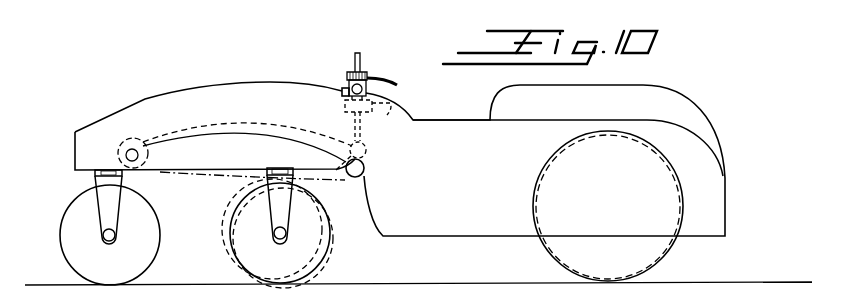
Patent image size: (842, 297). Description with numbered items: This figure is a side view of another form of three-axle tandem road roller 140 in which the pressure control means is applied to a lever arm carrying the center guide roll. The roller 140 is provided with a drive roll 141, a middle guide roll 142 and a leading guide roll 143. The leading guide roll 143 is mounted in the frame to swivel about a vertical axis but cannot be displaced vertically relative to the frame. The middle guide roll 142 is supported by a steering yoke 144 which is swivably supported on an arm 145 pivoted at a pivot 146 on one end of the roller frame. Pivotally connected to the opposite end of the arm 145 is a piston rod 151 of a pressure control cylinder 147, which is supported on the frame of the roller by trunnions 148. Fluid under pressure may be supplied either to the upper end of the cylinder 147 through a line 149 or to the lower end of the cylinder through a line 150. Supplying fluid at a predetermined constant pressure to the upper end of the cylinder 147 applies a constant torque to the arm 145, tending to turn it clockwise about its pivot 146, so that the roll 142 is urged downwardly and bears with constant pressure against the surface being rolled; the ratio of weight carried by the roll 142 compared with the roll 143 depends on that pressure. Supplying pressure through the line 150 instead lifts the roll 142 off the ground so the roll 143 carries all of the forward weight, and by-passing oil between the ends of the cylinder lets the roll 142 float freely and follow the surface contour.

The roller 140 is at (418, 111).
The drive roll 141 is at (652, 260).
The middle guide roll 142 is at (320, 256).
The leading guide roll 143 is at (147, 255).
The steering yoke 144 is at (278, 218).
The arm 145 is at (258, 125).
The pivot 146 is at (128, 154).
The pressure control cylinder 147 is at (362, 70).
The trunnions 148 is at (350, 88).
The line 149 is at (386, 82).
The line 150 is at (374, 110).
The piston rod 151 is at (368, 137).